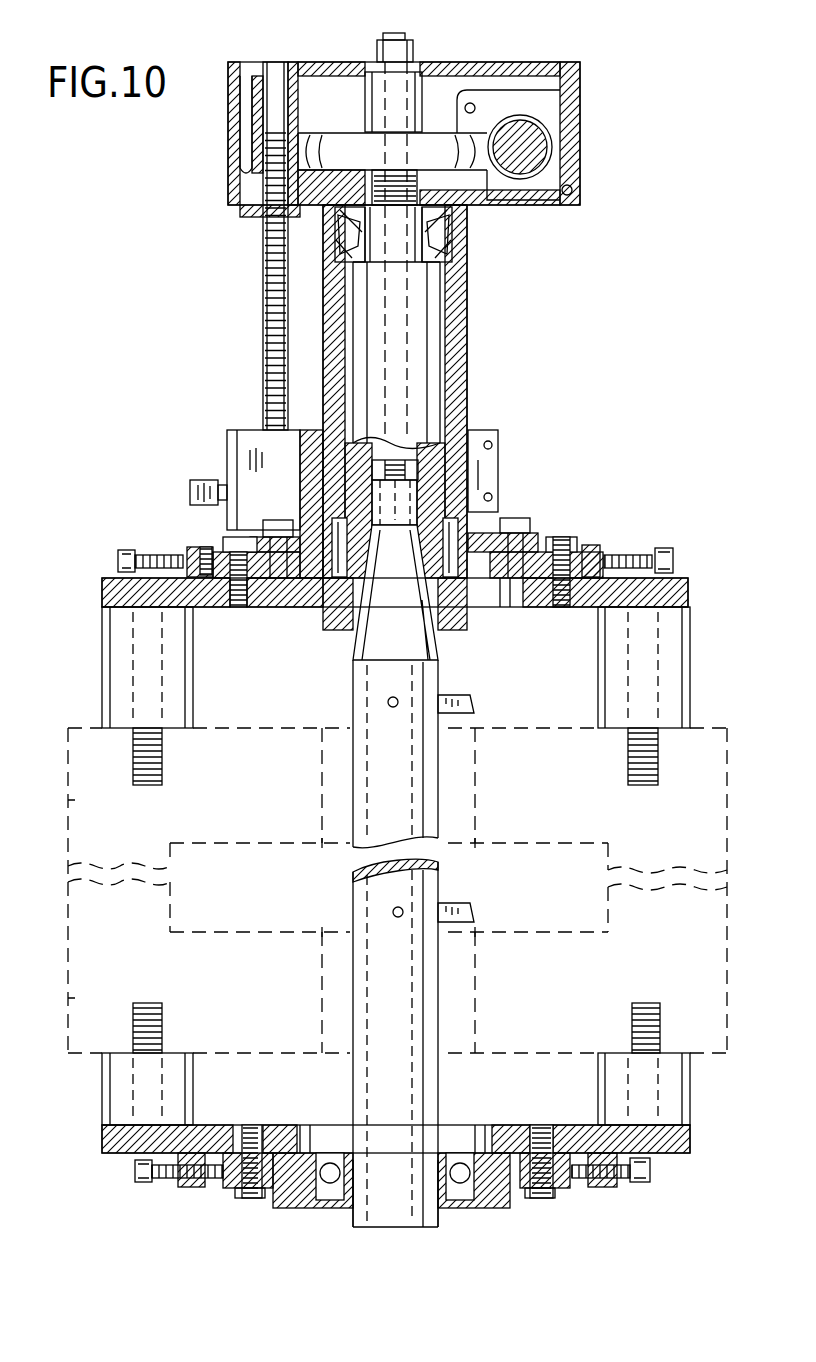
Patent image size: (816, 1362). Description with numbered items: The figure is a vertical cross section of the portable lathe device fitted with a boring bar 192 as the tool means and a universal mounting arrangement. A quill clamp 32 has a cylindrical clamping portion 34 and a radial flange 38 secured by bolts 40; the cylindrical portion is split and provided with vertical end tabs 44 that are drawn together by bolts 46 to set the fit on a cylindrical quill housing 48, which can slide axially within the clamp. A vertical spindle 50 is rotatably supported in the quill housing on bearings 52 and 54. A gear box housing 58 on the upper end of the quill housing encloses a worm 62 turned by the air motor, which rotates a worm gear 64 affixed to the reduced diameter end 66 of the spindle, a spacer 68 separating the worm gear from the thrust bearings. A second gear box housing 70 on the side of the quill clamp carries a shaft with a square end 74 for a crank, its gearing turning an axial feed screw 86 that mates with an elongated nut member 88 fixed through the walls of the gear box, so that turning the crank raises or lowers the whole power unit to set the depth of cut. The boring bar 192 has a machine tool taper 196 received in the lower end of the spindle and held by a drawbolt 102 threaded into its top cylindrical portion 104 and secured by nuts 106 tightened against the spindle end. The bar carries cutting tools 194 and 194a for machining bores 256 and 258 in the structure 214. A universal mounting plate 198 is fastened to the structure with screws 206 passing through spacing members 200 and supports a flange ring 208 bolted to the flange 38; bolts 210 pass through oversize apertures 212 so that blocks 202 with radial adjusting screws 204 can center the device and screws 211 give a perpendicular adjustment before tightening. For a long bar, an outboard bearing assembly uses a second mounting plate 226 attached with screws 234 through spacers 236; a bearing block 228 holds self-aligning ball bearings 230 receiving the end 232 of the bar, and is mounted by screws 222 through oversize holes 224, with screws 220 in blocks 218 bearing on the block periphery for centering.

The quill clamp 32 is at (520, 460).
The cylindrical clamping portion 34 is at (308, 436).
The radial flange 38 is at (530, 530).
The bolts 40 is at (265, 528).
The vertical end tabs 44 is at (498, 475).
The bolts 46 is at (495, 438).
The quill housing 48 is at (468, 300).
The spindle 50 is at (430, 342).
The thrust bearings 52 is at (452, 228).
The bearing 54 is at (340, 524).
The gear box housing 58 is at (540, 62).
The worm 62 is at (555, 147).
The worm gear 64 is at (430, 150).
The reduced diameter end 66 is at (368, 97).
The spacer 68 is at (372, 178).
The second gear box housing 70 is at (240, 432).
The square end 74 is at (192, 492).
The axial feed screw 86 is at (265, 320).
The elongated nut member 88 is at (246, 174).
The drawbolt 102 is at (385, 464).
The top cylindrical portion 104 is at (380, 492).
The nuts 106 is at (415, 60).
The boring bar 192 is at (362, 806).
The cutting tool 194 is at (472, 706).
The cutting tool 194a is at (472, 912).
The machine tool taper 196 is at (378, 636).
The universal mounting plate 198 is at (102, 592).
The spacing members 200 is at (102, 670).
The blocks 202 is at (126, 553).
The radial adjusting screws 204 is at (118, 560).
The screws 206 is at (163, 770).
The flange ring 208 is at (203, 546).
The bolts 210 is at (242, 608).
The screws 211 is at (195, 546).
The oversize apertures 212 is at (232, 600).
The structure 214 is at (66, 806).
The blocks 218 is at (192, 1190).
The screws 220 is at (135, 1172).
The screws 222 is at (252, 1200).
The oversize holes 224 is at (256, 1130).
The second mounting plate 226 is at (102, 1140).
The bearing block 228 is at (292, 1210).
The ball bearings 230 is at (338, 1208).
The end 232 is at (400, 1230).
The screws 234 is at (163, 1024).
The spacers 236 is at (102, 1100).
The bore 256 is at (470, 780).
The bore 258 is at (470, 990).